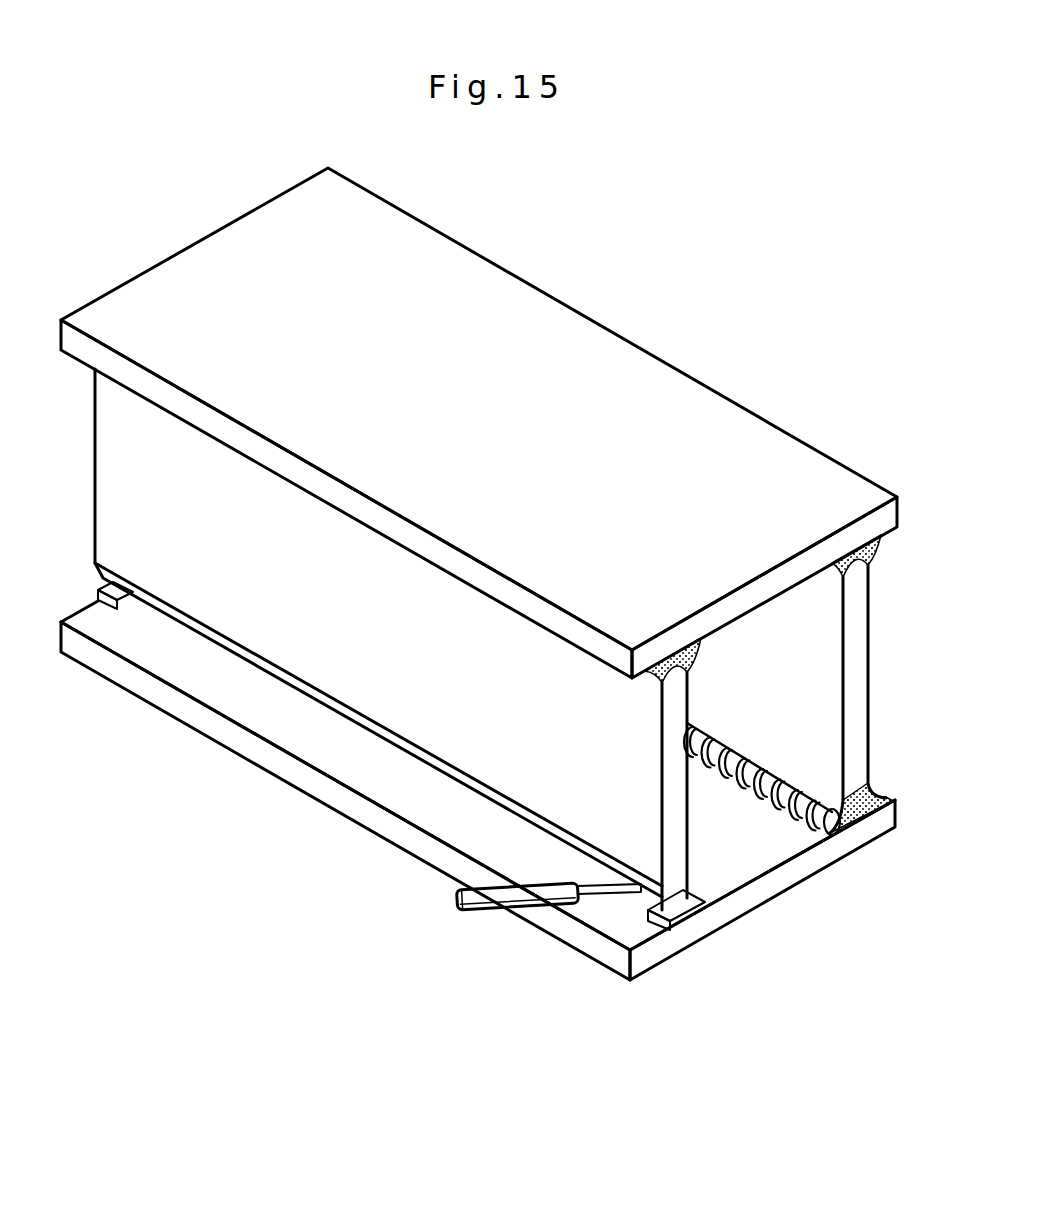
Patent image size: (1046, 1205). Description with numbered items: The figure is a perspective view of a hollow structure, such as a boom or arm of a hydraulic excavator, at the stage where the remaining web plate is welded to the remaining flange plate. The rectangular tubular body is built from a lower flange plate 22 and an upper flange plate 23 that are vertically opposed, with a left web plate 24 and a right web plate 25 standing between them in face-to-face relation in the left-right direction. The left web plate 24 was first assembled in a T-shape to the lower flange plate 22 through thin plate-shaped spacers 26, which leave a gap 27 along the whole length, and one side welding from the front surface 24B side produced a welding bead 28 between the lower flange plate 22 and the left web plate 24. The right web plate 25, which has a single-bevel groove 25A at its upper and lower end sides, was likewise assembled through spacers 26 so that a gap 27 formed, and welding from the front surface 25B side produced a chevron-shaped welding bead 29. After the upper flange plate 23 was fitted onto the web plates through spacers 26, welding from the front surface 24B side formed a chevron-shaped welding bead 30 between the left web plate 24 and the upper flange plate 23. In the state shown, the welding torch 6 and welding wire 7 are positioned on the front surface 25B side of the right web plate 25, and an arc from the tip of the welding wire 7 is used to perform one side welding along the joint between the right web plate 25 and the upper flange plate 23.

The lower flange plate 22 is at (561, 373).
The upper flange plate 23 is at (761, 895).
The left web plate 24 is at (770, 665).
The front surface of left web plate 24B is at (870, 666).
The right web plate 25 is at (378, 540).
The single-bevel groove 25A is at (232, 645).
The front surface of right web plate 25B is at (328, 652).
The spacer 26 is at (106, 596).
The gap 27 is at (382, 750).
The welding bead 28 is at (862, 552).
The welding bead 29 is at (680, 660).
The welding bead 30 is at (808, 808).
The welding torch 6 is at (487, 897).
The welding wire 7 is at (608, 895).